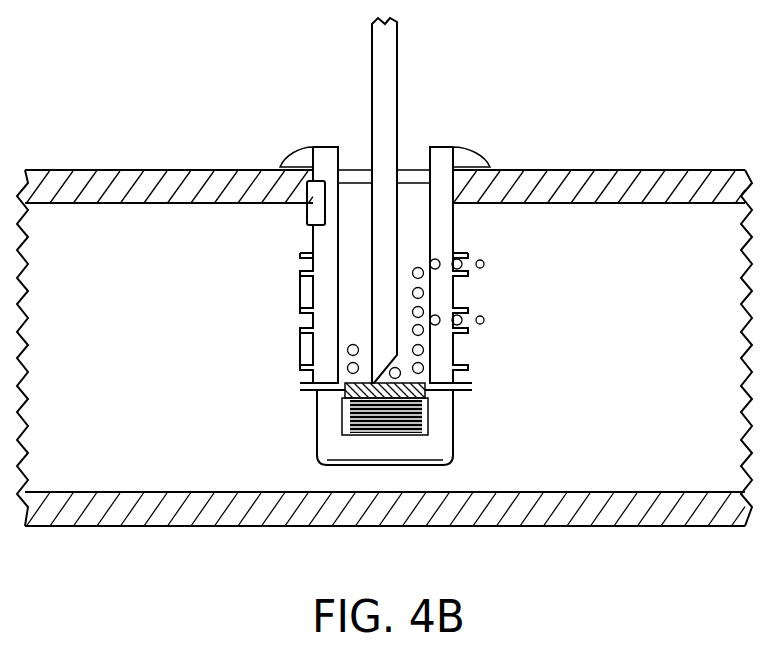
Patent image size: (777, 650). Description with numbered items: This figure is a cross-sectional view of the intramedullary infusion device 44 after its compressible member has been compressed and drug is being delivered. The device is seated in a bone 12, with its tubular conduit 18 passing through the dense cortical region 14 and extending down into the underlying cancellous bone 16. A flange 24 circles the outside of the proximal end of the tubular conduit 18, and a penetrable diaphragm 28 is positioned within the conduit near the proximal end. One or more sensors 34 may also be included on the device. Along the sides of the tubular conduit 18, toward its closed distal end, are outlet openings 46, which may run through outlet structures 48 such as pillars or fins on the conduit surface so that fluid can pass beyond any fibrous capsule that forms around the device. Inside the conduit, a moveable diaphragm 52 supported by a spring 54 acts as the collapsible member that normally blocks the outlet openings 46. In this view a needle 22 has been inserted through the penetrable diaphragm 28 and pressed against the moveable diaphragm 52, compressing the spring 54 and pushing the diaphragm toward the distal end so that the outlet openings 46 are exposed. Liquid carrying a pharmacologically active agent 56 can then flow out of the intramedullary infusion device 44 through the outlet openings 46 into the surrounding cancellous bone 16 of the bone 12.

The bone 12 is at (668, 154).
The cortical region 14 is at (596, 176).
The cancellous bone 16 is at (597, 468).
The tubular conduit 18 is at (455, 428).
The needle 22 is at (396, 48).
The flange 24 is at (324, 150).
The penetrable diaphragm 28 is at (408, 176).
The sensor 34 is at (310, 192).
The intramedullary infusion device 44 is at (471, 137).
The outlet openings 46 is at (299, 268).
The outlet structure 48 is at (299, 320).
The moveable diaphragm 52 is at (345, 391).
The spring 54 is at (350, 420).
The pharmacologically active agent 56 is at (484, 264).